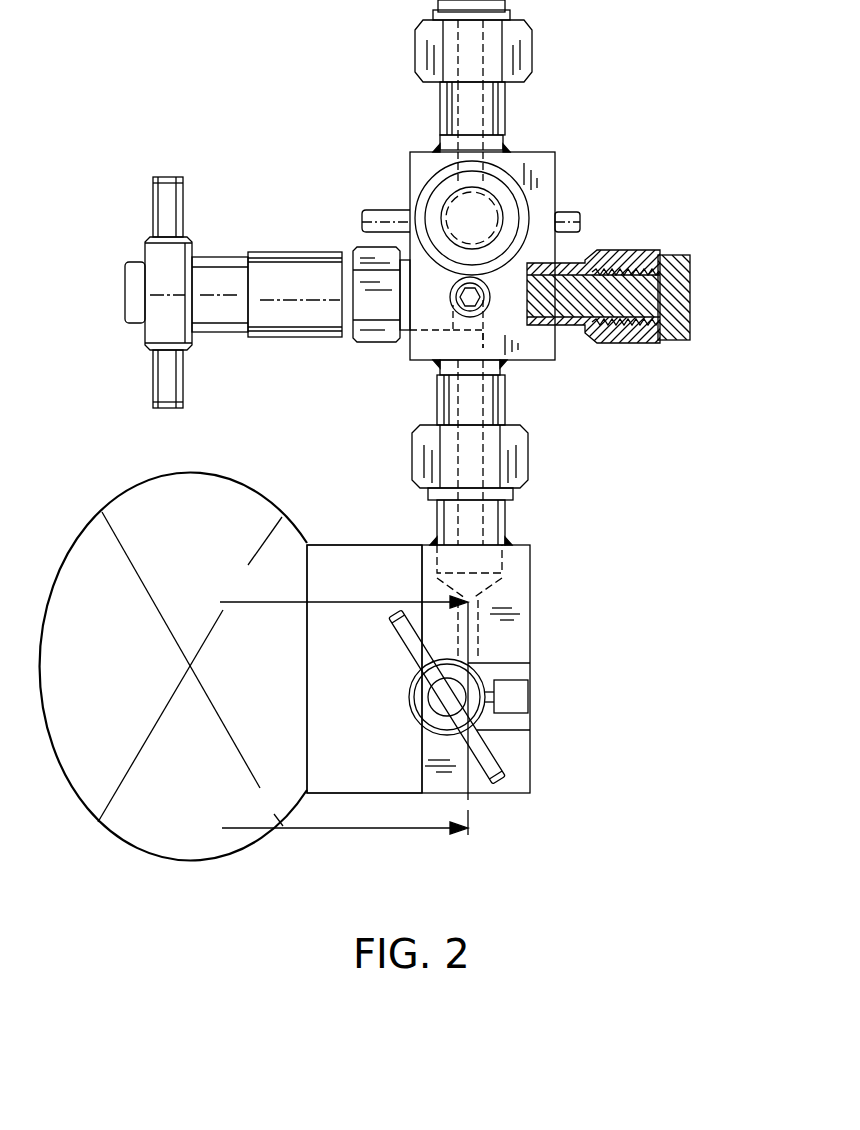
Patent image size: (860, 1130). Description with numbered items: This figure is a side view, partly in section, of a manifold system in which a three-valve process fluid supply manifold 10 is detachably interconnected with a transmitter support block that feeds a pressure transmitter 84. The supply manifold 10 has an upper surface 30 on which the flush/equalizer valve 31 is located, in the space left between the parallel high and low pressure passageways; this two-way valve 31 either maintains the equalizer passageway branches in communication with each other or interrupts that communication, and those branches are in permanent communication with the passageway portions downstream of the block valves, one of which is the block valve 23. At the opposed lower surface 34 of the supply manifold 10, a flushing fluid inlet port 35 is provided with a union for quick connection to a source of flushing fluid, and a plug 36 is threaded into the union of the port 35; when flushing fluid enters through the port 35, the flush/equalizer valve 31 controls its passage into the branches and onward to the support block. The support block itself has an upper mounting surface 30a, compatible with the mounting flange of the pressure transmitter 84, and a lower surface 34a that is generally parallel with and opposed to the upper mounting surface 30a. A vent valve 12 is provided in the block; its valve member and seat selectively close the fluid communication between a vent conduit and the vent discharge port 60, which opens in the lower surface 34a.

The process fluid supply manifold 10 is at (572, 76).
The vent valve 12 is at (445, 697).
The block valve 23 is at (388, 218).
The upper surface 30 is at (410, 170).
The upper mounting surface 30a is at (422, 743).
The flush/equalizer valve 31 is at (310, 322).
The lower surface 34 is at (555, 183).
The lower surface 34a is at (532, 570).
The flushing fluid inlet port 35 is at (622, 345).
The plug 36 is at (620, 293).
The vent discharge port 60 is at (518, 697).
The pressure transmitter 84 is at (243, 482).